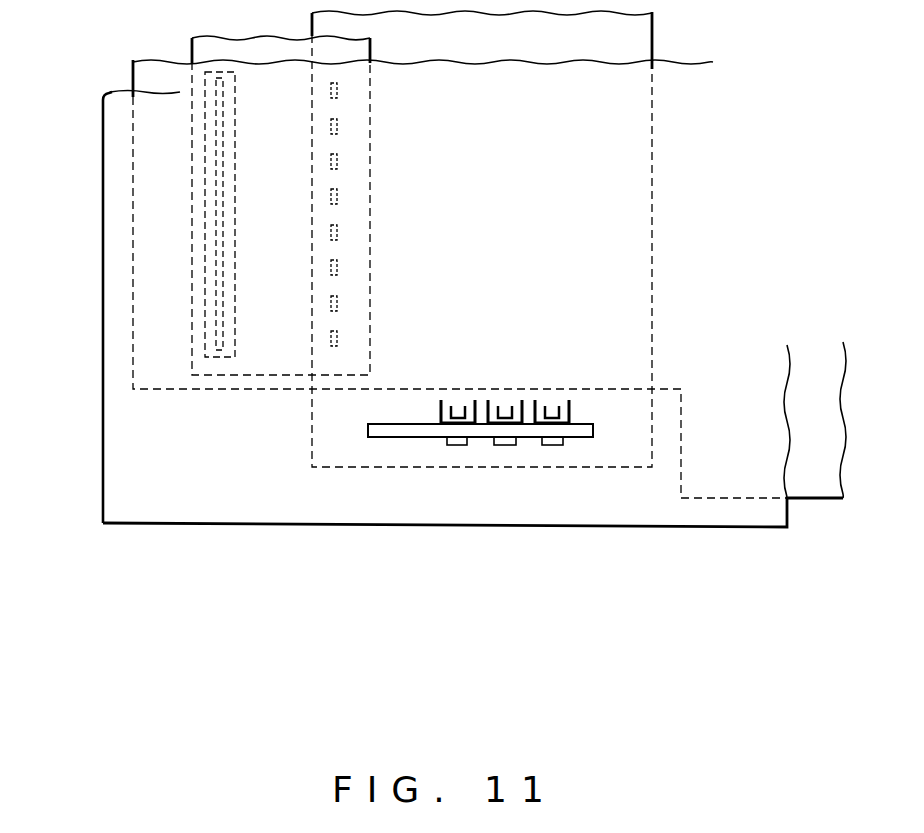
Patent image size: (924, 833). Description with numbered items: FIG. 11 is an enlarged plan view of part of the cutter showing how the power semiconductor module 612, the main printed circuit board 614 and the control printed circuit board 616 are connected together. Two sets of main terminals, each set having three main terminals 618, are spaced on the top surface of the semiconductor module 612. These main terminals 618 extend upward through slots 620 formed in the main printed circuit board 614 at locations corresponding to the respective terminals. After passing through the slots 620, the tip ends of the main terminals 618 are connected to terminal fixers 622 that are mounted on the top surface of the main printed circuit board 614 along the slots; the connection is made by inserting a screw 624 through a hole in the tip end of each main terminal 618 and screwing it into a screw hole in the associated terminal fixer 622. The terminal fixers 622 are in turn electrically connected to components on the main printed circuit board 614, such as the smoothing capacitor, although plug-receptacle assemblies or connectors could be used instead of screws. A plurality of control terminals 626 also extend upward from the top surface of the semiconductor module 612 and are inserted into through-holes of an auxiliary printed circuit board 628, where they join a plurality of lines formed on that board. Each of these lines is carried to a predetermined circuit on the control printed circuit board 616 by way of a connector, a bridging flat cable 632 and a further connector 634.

The semiconductor module 612 is at (640, 28).
The main printed circuit board 614 is at (263, 506).
The control printed circuit board 616 is at (132, 72).
The main terminal 618 is at (443, 430).
The slot 620 is at (588, 440).
The terminal fixer 622 is at (568, 400).
The screw 624 is at (549, 446).
The control terminal 626 is at (337, 95).
The auxiliary printed circuit board 628 is at (192, 42).
The bridging flat cable 632 is at (222, 227).
The connector 634 is at (235, 242).